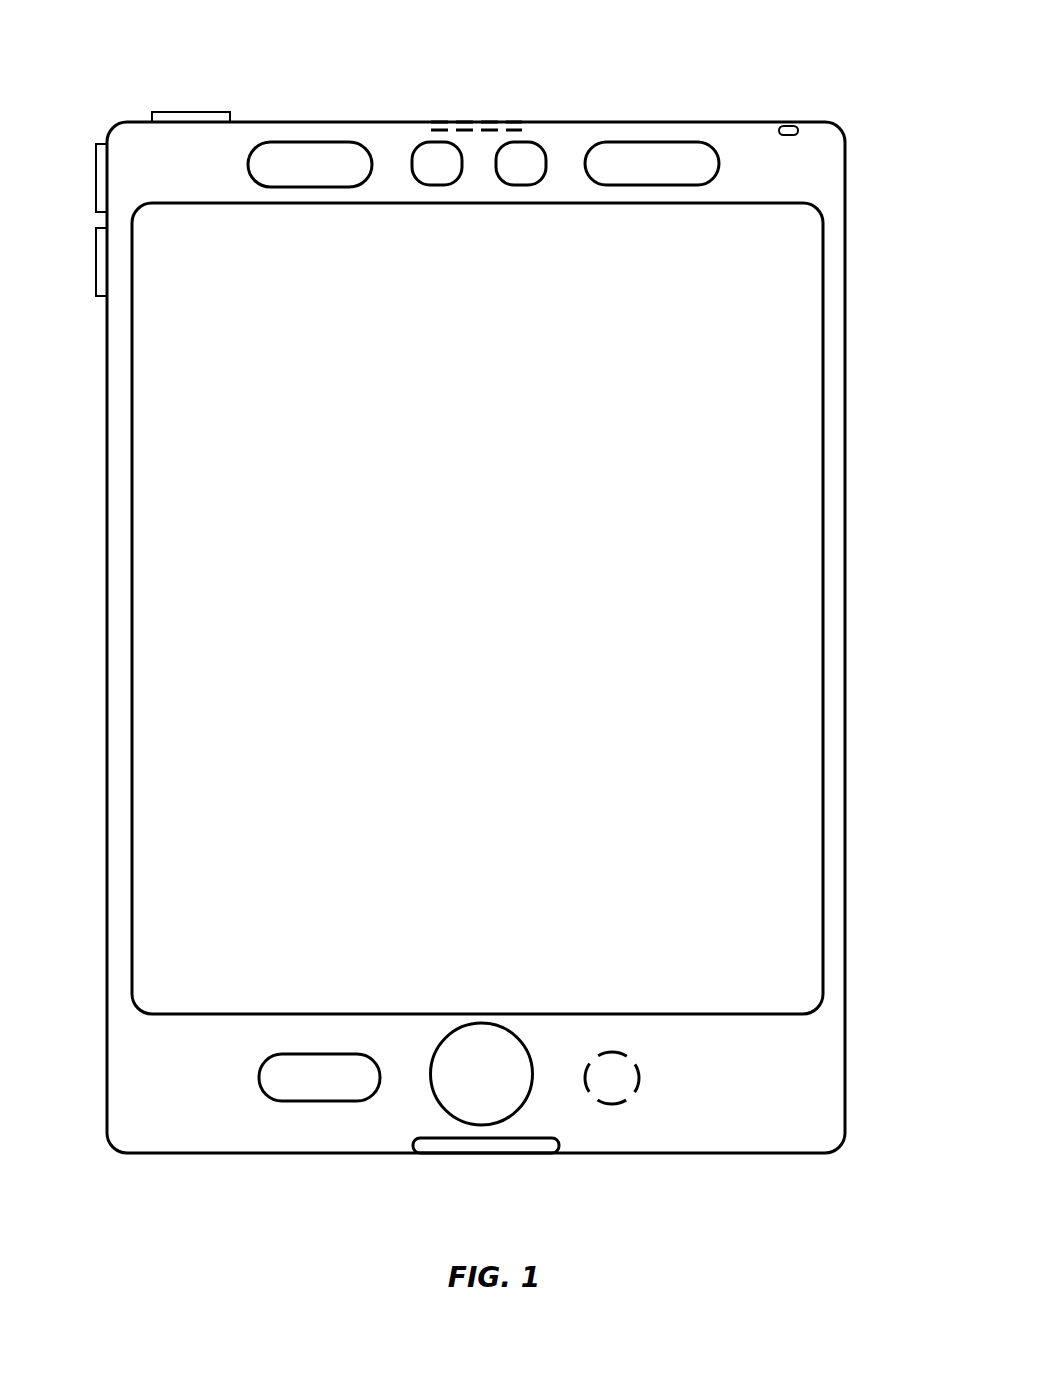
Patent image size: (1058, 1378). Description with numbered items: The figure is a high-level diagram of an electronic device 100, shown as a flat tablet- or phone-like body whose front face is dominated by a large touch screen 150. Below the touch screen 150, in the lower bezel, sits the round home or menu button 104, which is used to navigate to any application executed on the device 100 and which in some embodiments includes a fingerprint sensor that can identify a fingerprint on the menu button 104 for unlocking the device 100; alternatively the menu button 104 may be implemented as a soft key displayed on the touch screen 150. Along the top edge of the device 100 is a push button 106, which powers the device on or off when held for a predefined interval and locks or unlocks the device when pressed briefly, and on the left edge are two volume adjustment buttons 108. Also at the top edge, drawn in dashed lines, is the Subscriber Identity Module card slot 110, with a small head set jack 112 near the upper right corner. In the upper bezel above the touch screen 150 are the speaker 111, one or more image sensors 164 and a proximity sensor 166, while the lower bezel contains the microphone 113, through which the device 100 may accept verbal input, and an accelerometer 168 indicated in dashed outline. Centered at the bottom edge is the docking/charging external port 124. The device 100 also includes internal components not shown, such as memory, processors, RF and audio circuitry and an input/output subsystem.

The electronic device 100 is at (878, 124).
The menu button 104 is at (482, 1074).
The push button 106 is at (199, 112).
The volume adjustment buttons 108 is at (96, 177).
The SIM card slot 110 is at (455, 122).
The speaker 111 is at (295, 173).
The head set jack 112 is at (783, 127).
The microphone 113 is at (303, 1086).
The docking/charging external port 124 is at (528, 1154).
The touch screen 150 is at (823, 502).
The image sensors 164 is at (422, 172).
The proximity sensors 166 is at (637, 172).
The accelerometers 168 is at (597, 1087).